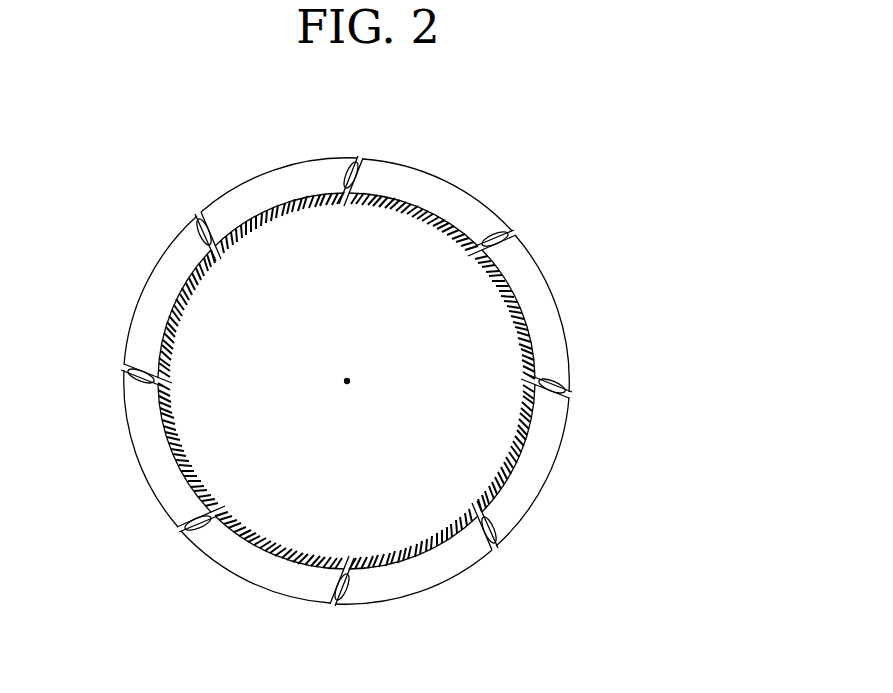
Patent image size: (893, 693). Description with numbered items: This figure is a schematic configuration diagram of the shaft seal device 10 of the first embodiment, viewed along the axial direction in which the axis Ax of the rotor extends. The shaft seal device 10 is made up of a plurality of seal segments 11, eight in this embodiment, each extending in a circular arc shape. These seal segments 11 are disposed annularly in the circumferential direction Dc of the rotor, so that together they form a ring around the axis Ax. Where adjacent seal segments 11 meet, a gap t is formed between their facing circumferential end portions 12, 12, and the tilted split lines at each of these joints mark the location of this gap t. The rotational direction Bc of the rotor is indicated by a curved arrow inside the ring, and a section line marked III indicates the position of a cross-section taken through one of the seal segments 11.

The shaft seal device 10 is at (357, 389).
The seal segment 11 is at (348, 391).
The circumferential end portion 12 is at (346, 381).
The gap t is at (363, 160).
The section line III- III is at (299, 237).
The axis Ax is at (344, 386).
The rotational direction Bc is at (376, 319).
The circumferential direction Dc is at (677, 349).